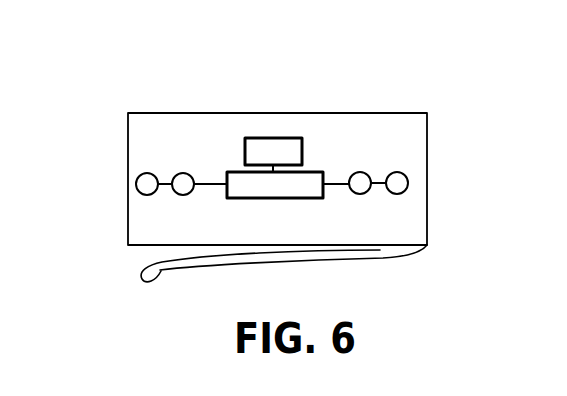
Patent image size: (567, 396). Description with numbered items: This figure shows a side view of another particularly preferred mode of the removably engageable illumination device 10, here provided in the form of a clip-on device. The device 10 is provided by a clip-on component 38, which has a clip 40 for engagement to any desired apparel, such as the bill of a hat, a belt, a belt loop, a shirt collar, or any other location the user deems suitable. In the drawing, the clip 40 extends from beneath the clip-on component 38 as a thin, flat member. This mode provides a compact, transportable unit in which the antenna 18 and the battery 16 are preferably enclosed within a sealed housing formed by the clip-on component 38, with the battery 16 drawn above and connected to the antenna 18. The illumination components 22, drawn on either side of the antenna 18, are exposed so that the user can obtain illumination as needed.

The removably engageable illumination device 10 is at (404, 62).
The clip-on component 38 is at (192, 117).
The battery 16 is at (255, 138).
The antenna 18 is at (302, 197).
The illumination components 22 is at (140, 180).
The clip 40 is at (163, 268).